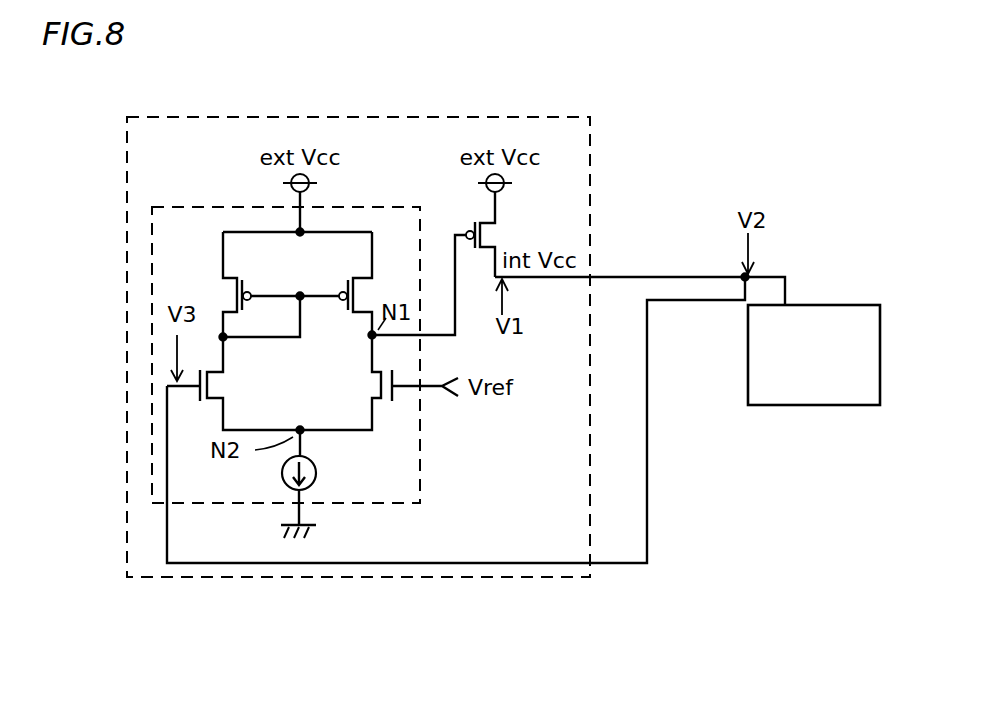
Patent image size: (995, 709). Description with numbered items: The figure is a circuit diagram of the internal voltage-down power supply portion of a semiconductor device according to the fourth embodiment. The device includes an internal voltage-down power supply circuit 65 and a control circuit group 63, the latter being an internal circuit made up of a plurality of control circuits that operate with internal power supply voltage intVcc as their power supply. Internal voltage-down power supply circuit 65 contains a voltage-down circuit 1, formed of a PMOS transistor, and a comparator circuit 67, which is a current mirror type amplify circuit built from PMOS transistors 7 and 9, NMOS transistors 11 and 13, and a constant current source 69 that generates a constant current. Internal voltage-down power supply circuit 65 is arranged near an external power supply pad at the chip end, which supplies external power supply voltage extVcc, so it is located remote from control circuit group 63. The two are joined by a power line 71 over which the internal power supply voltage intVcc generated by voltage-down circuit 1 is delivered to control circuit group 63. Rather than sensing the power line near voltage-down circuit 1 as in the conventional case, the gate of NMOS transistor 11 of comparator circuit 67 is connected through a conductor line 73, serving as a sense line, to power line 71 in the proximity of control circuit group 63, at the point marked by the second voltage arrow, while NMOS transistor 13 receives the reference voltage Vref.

The voltage-down circuit 1 is at (485, 233).
The PMOS transistor 7 is at (236, 274).
The PMOS transistor 9 is at (350, 278).
The NMOS transistor 11 is at (222, 381).
The NMOS transistor 13 is at (372, 382).
The control circuit group 63 is at (783, 405).
The internal voltage-down power supply circuit 65 is at (593, 155).
The comparator circuit 67 is at (419, 450).
The constant current source 69 is at (316, 473).
The power line 71 is at (618, 276).
The conductor line 73 is at (648, 500).